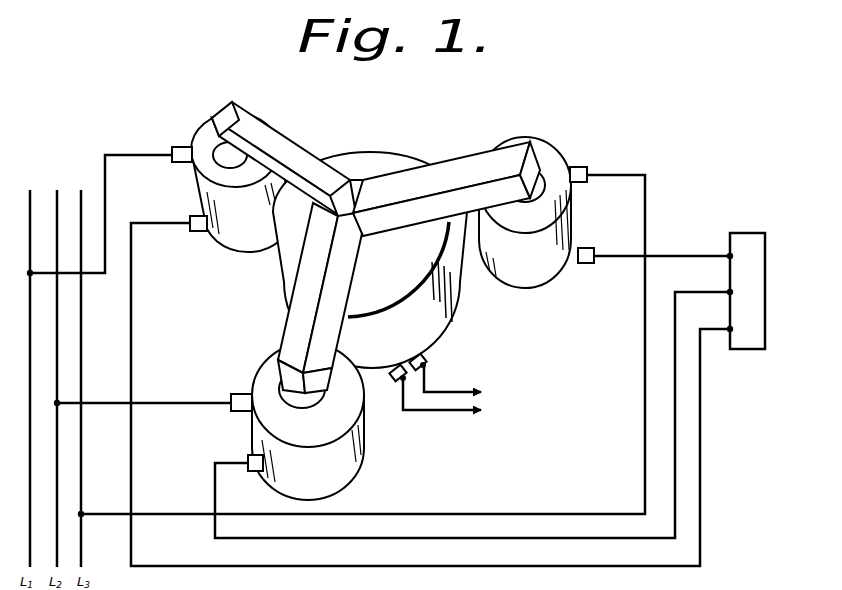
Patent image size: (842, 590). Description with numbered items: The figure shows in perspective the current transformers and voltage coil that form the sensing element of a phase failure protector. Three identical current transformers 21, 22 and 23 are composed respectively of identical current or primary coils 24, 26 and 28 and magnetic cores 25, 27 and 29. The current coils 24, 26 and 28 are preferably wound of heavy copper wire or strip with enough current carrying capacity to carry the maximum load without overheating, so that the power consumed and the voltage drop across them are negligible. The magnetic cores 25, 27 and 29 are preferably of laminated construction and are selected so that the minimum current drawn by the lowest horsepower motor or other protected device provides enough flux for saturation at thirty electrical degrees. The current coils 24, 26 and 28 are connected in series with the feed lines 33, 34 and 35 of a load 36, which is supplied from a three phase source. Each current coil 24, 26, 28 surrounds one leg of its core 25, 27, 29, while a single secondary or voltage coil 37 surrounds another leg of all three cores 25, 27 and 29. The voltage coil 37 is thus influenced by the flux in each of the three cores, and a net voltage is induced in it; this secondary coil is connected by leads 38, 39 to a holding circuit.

The current transformer 21 is at (201, 124).
The current transformer 22 is at (538, 293).
The current transformer 23 is at (248, 391).
The current coil 24 is at (298, 98).
The magnetic core 25 is at (300, 165).
The current coil 26 is at (581, 127).
The magnetic core 27 is at (461, 170).
The current coil 28 is at (352, 470).
The magnetic core 29 is at (316, 327).
The feed line 33 is at (104, 168).
The feed line 34 is at (116, 513).
The feed line 35 is at (116, 402).
The load 36 is at (757, 233).
The voltage coil 37 is at (405, 342).
The lead 38 is at (459, 398).
The lead 39 is at (449, 414).